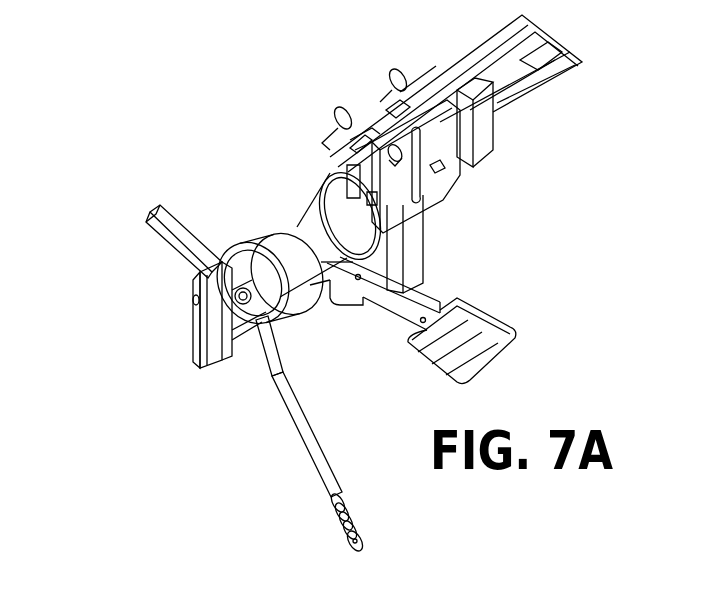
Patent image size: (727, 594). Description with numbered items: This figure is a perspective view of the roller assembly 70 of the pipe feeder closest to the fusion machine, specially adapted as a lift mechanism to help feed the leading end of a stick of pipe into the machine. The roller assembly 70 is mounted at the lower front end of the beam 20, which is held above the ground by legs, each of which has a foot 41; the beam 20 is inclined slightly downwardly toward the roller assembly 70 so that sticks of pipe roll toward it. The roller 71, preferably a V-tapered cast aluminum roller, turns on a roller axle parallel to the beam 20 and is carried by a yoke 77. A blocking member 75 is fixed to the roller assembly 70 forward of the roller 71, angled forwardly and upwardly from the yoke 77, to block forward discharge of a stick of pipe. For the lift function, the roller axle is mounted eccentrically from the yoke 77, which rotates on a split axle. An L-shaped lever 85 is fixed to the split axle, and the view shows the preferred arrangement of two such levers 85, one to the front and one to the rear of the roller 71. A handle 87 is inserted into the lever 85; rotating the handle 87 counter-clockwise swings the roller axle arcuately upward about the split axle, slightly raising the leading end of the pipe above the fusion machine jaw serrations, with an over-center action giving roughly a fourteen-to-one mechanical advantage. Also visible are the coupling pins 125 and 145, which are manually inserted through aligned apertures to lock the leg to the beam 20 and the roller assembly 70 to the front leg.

The beam 20 is at (580, 88).
The foot 41 is at (437, 368).
The roller assembly 70 is at (245, 145).
The roller 71 is at (262, 233).
The blocking member 75 is at (177, 255).
The yoke 77 is at (192, 338).
The L-shaped lever 85 is at (260, 350).
The handle 87 is at (302, 445).
The pin 125 is at (398, 74).
The pin 145 is at (340, 108).